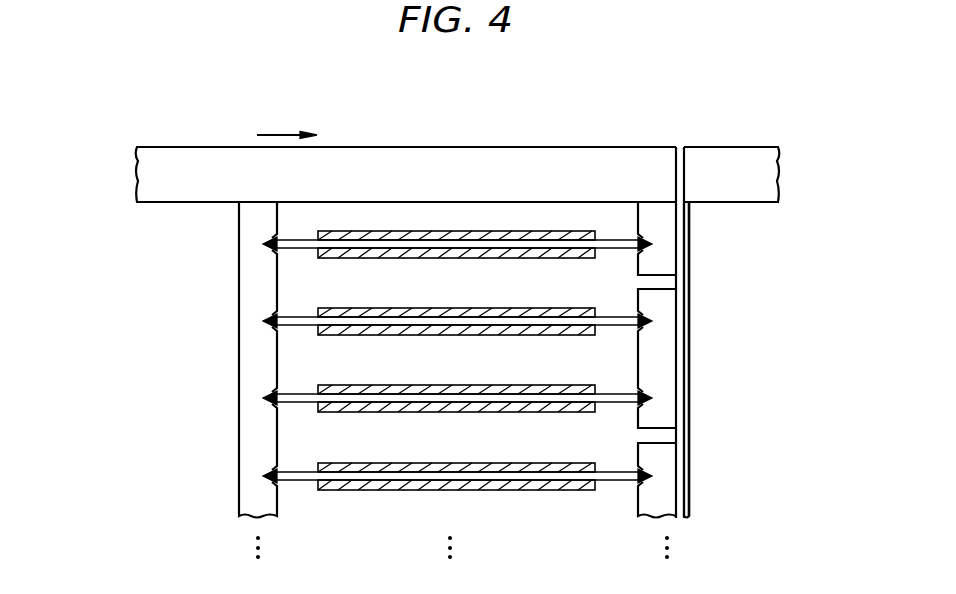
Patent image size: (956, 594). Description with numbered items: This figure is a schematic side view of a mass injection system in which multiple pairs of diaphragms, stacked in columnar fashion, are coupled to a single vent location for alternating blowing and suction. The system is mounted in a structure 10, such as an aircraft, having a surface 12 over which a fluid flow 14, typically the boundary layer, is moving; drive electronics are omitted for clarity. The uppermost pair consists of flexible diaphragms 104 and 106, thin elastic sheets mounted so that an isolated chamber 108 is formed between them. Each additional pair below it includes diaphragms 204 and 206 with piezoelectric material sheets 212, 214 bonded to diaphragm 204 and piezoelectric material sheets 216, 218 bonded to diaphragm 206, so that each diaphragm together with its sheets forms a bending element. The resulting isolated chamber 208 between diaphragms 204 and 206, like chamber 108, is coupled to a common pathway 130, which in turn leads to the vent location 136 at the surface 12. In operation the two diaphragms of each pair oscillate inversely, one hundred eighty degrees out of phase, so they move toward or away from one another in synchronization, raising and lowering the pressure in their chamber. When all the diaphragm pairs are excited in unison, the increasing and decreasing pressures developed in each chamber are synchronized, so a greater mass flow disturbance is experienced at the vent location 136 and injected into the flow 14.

The structure 10 is at (161, 158).
The surface 12 is at (394, 146).
The fluid flow 14 is at (276, 134).
The diaphragm 104 is at (518, 246).
The diaphragm 106 is at (568, 321).
The isolated chamber 108 is at (462, 274).
The pathway 130 is at (678, 238).
The vent location 136 is at (678, 147).
The diaphragm 204 is at (510, 399).
The diaphragm 206 is at (577, 478).
The isolated chamber 208 is at (545, 436).
The piezoelectric material sheet 212 is at (345, 386).
The piezoelectric material sheet 214 is at (381, 411).
The piezoelectric material sheet 216 is at (355, 464).
The piezoelectric material sheet 218 is at (415, 494).